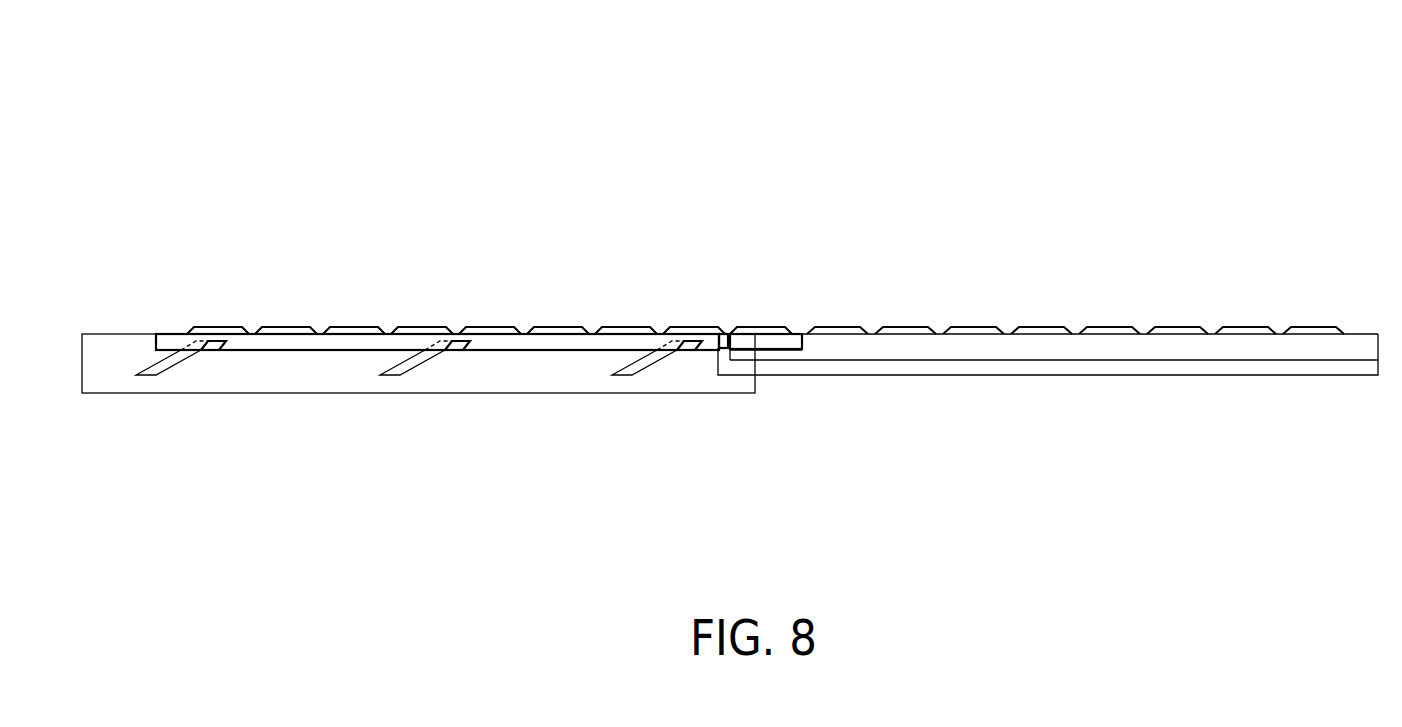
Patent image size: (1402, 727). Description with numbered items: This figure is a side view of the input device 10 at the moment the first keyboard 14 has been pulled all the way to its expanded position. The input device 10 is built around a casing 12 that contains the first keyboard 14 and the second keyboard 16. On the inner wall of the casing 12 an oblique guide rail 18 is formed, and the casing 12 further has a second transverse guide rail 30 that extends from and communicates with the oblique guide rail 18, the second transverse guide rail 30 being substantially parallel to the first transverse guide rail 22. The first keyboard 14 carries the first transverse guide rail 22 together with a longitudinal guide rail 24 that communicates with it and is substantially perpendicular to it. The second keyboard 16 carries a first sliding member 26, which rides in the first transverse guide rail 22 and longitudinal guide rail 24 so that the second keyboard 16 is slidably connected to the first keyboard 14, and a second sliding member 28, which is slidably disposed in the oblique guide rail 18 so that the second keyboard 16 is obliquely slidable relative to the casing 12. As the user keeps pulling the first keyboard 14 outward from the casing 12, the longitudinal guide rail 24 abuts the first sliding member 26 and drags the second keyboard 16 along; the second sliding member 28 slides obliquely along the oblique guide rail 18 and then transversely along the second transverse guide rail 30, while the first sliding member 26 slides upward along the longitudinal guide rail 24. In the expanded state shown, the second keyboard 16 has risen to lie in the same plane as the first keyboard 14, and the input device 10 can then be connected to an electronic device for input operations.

The input device 10 is at (828, 104).
The casing 12 is at (176, 389).
The first keyboard 14 is at (838, 320).
The second keyboard 16 is at (212, 320).
The oblique guide rail 18 is at (418, 366).
The first transverse guide rail 22 is at (1075, 366).
The longitudinal guide rail 24 is at (723, 356).
The first sliding member 26 is at (723, 333).
The second sliding member 28 is at (685, 352).
The second transverse guide rail 30 is at (445, 338).